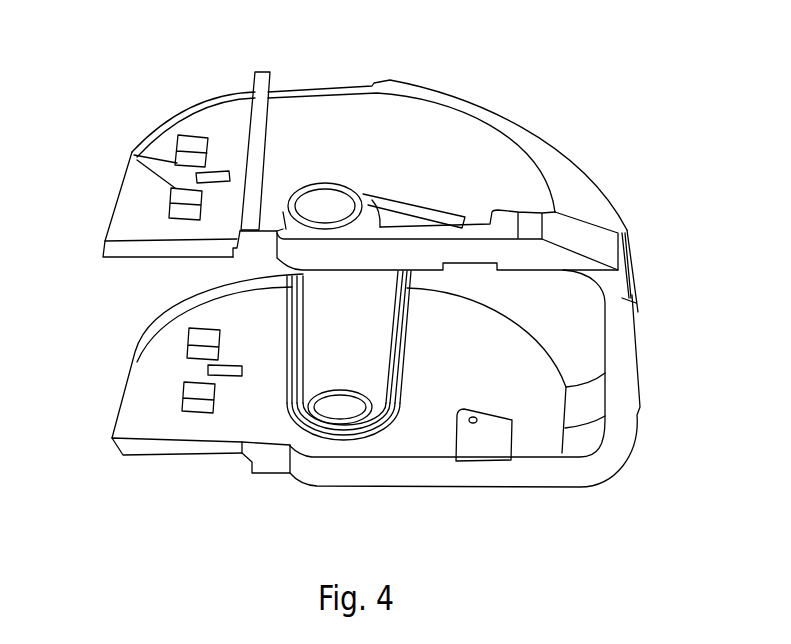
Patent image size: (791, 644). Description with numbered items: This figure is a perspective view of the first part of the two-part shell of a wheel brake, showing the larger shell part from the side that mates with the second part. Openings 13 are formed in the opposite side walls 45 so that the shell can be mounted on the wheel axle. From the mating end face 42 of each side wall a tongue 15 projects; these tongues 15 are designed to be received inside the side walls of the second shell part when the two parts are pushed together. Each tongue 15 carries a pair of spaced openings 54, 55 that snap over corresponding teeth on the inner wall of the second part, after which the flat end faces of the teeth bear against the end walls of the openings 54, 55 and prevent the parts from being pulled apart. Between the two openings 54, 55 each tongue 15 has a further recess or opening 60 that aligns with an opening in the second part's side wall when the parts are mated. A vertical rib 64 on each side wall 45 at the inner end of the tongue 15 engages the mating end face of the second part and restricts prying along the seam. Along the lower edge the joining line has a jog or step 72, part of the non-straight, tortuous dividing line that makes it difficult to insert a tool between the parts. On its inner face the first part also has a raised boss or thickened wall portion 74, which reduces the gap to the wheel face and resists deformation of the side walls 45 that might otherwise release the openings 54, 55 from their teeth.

The opening 13 is at (335, 203).
The tongue 15 is at (202, 128).
The mating end face 42 is at (253, 72).
The side wall 45 is at (437, 393).
The opening 54 is at (190, 157).
The opening 55 is at (187, 210).
The recess or opening 60 is at (223, 167).
The vertical rib 64 is at (257, 160).
The jog or step 72 is at (250, 474).
The raised boss or thickened wall portion 74 is at (378, 342).